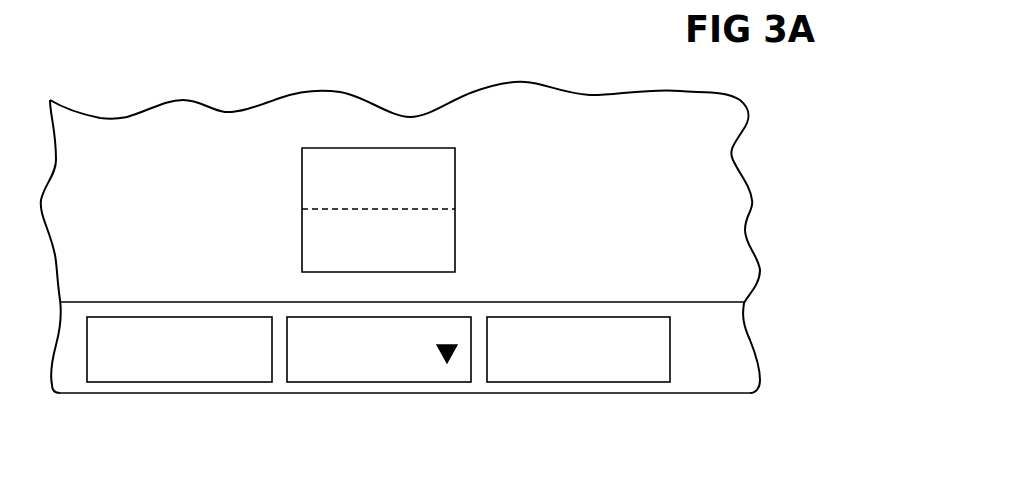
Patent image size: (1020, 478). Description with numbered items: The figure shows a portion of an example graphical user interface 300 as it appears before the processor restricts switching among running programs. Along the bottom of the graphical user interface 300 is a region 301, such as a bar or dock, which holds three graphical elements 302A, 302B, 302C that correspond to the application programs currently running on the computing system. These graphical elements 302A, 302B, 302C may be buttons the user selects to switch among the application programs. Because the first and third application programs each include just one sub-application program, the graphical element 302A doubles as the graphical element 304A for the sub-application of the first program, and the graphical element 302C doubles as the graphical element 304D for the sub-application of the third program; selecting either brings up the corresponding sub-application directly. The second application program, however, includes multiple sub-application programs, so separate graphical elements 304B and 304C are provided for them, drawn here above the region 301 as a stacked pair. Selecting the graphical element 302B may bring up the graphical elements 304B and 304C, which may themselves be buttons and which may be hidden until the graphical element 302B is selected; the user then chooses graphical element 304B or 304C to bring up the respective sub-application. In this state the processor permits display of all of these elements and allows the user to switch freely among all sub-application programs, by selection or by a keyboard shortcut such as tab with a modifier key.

The graphical user interface 300 is at (734, 190).
The region 301 is at (713, 362).
The graphical element 302A is at (165, 383).
The graphical element 302B is at (330, 383).
The graphical element 302C is at (526, 383).
The graphical element 304A is at (148, 332).
The graphical element 304B is at (440, 175).
The graphical element 304C is at (440, 247).
The graphical element 304D is at (594, 333).